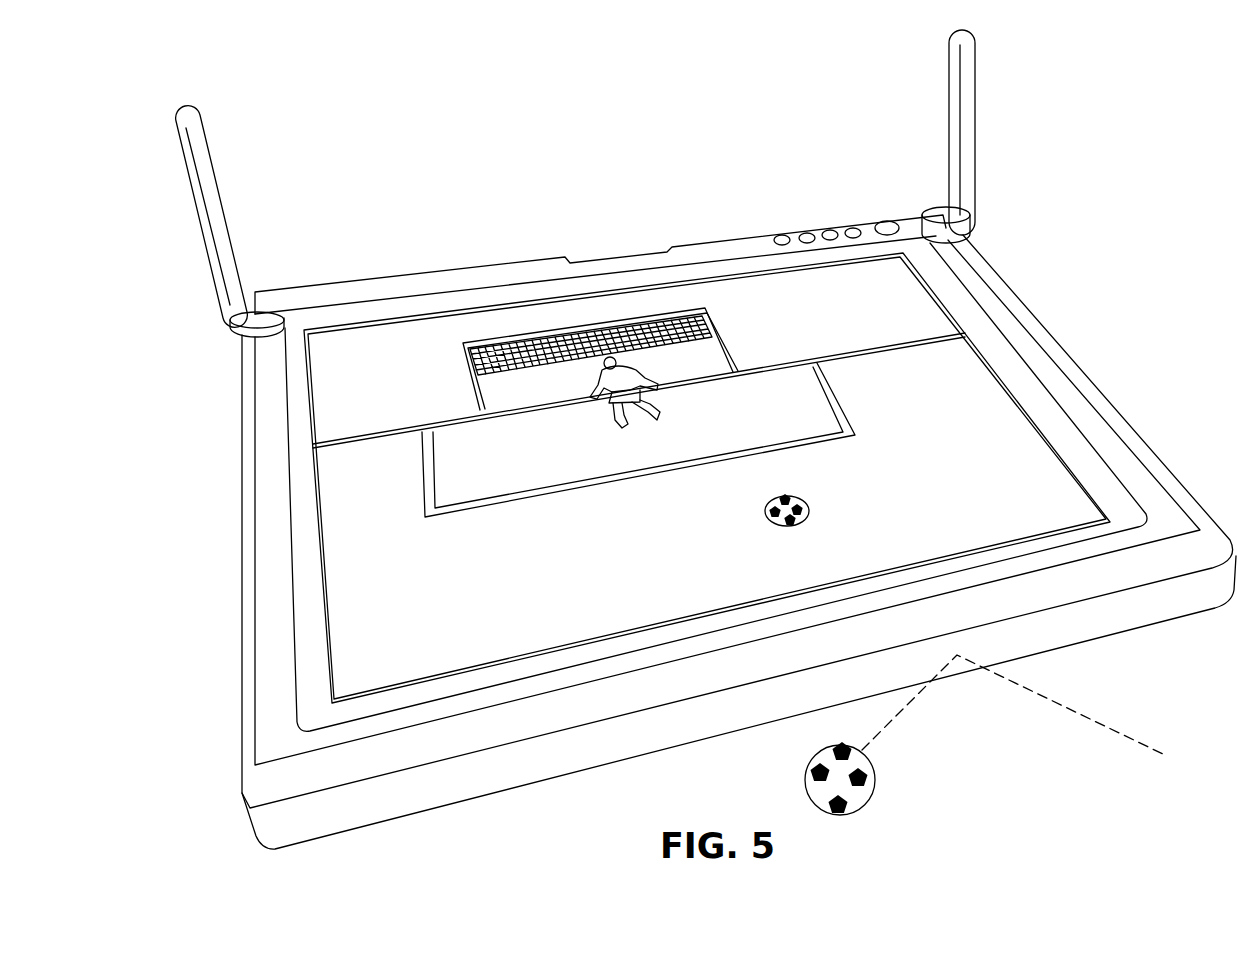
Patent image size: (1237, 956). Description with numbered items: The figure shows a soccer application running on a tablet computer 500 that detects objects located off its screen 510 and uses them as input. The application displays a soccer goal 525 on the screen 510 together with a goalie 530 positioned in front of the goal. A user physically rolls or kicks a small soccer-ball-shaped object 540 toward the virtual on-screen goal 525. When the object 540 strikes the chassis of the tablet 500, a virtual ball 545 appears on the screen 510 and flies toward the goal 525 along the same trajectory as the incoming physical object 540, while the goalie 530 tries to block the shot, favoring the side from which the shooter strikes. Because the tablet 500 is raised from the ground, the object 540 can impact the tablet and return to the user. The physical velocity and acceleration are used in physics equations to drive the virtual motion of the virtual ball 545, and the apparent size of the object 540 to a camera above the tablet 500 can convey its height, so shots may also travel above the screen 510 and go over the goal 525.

The tablet computer 500 is at (996, 262).
The screen 510 is at (850, 297).
The soccer goal 525 is at (708, 323).
The goalie 530 is at (663, 402).
The virtual ball 545 is at (808, 517).
The soccer-ball-shaped object 540 is at (868, 800).